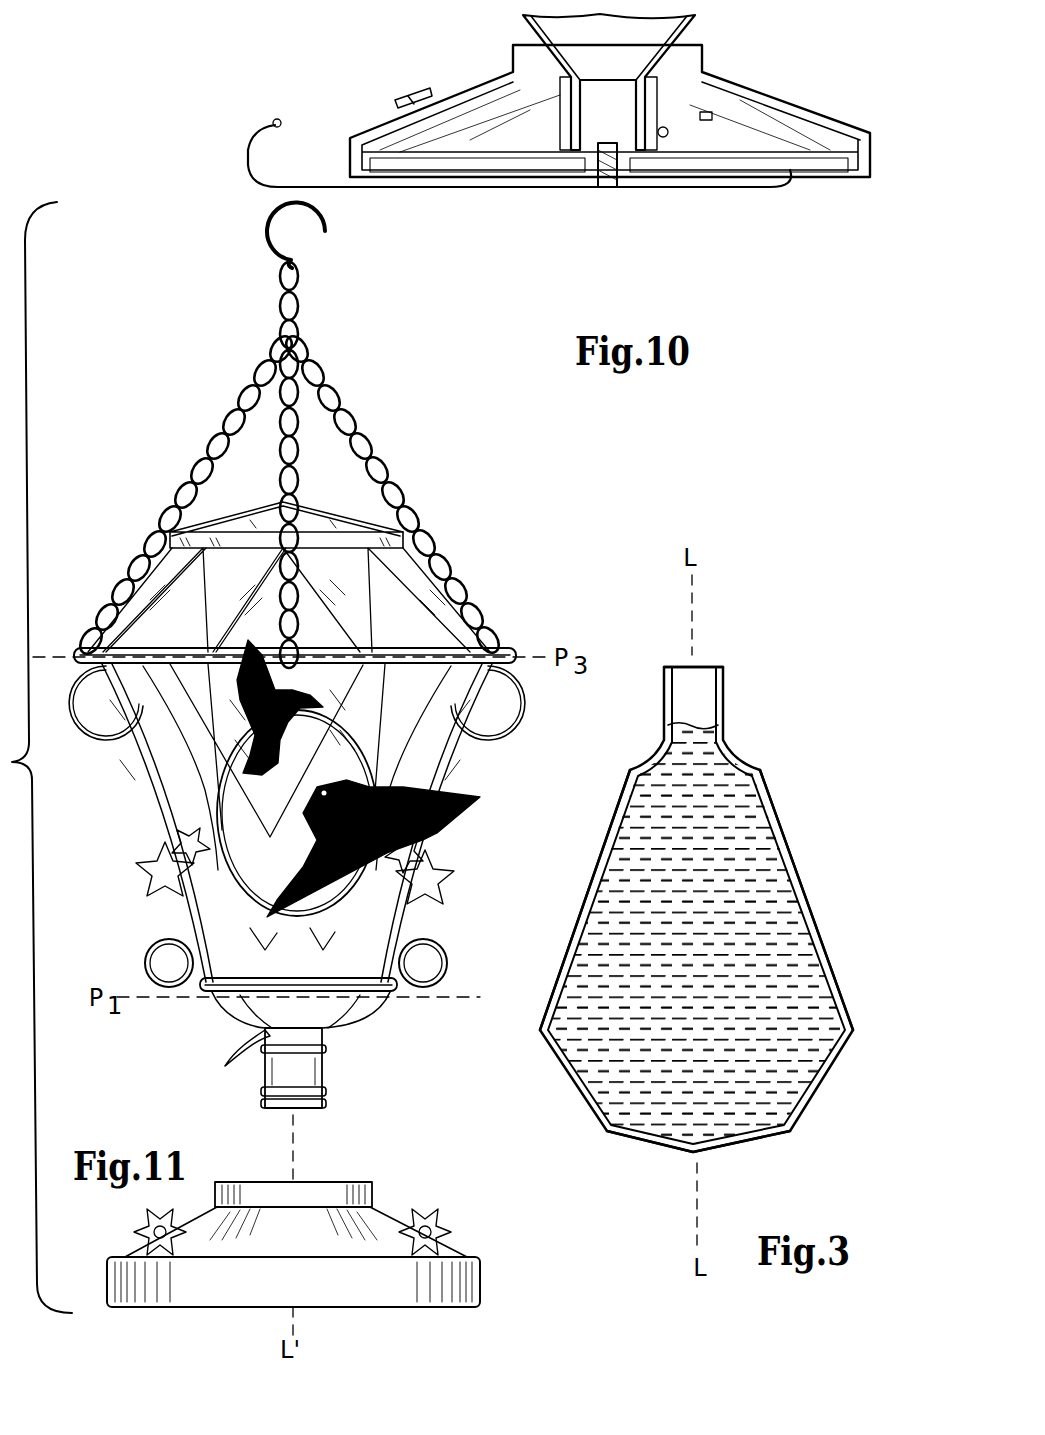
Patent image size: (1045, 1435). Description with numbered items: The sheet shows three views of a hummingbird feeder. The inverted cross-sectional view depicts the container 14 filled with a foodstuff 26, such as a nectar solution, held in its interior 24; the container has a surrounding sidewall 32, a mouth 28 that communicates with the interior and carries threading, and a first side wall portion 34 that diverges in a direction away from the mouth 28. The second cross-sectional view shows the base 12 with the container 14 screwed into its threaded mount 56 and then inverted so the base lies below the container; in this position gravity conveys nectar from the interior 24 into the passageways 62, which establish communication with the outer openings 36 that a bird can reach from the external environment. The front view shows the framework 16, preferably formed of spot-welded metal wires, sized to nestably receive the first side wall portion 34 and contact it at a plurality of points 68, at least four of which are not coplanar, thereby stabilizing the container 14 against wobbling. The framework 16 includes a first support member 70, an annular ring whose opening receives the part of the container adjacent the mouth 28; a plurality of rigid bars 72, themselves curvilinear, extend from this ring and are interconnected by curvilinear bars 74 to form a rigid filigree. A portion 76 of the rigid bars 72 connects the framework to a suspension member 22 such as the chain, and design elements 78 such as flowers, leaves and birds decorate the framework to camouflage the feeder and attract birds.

In FIG. 10, the base 12 is at (780, 80).
In FIG. 10, the container 14 is at (697, 33).
In FIG. 11, the container 14 is at (360, 515).
In FIG. 3, the container 14 is at (630, 747).
In FIG. 11, the framework 16 is at (530, 647).
In FIG. 11, the suspension member 22 is at (330, 383).
In FIG. 10, the interior 24 is at (586, 58).
In FIG. 3, the interior 24 is at (683, 961).
In FIG. 3, the foodstuff 26 is at (567, 1073).
In FIG. 11, the mouth 28 is at (333, 1070).
In FIG. 3, the mouth 28 is at (697, 673).
In FIG. 3, the sidewall 32 is at (773, 795).
In FIG. 11, the first side wall portion 34 is at (137, 887).
In FIG. 3, the first side wall portion 34 is at (597, 797).
In FIG. 10, the outer openings 36 is at (412, 85).
In FIG. 10, the threaded mount 56 is at (663, 128).
In FIG. 10, the passageways 62 is at (530, 167).
In FIG. 11, the points 68 is at (226, 1064).
In FIG. 11, the first support member 70 is at (290, 1000).
In FIG. 11, the rigid bars 72 is at (165, 760).
In FIG. 11, the curvilinear bars 74 is at (450, 977).
In FIG. 11, the portion 76 is at (102, 750).
In FIG. 11, the design elements 78 is at (297, 693).